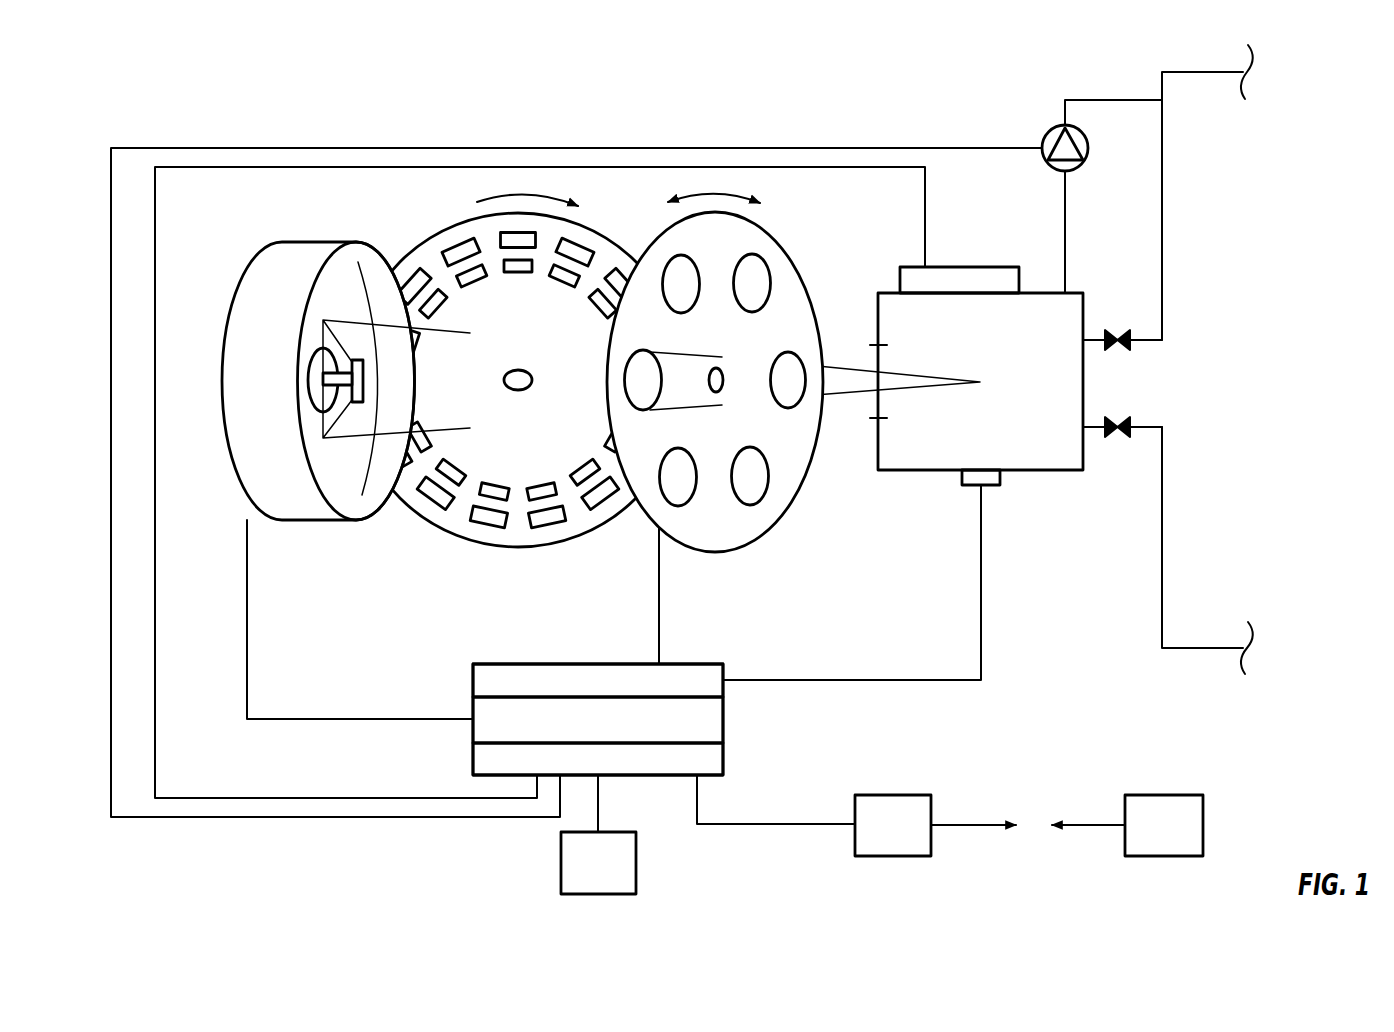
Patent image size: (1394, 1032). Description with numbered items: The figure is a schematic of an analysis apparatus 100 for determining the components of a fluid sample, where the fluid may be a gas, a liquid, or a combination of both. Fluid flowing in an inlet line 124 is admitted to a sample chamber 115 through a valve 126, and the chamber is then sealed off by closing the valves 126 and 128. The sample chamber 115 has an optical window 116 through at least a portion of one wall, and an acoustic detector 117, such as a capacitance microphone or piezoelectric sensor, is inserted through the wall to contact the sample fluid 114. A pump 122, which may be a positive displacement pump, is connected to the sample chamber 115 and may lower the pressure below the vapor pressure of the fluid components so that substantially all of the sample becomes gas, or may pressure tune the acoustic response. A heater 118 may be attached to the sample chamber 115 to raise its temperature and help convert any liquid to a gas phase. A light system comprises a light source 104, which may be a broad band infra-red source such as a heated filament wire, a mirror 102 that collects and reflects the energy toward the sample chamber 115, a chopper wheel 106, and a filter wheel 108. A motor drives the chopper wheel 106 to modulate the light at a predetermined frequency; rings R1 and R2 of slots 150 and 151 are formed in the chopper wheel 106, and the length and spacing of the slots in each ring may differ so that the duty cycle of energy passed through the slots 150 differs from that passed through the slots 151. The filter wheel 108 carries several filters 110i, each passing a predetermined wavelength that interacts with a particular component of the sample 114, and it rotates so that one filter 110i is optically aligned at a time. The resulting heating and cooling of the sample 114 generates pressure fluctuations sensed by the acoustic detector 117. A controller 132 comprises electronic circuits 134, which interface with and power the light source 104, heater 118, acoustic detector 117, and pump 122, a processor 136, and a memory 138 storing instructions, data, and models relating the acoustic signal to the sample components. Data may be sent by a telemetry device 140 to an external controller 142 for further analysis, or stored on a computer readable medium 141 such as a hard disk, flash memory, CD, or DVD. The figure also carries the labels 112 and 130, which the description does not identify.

The analysis apparatus 100 is at (203, 70).
The mirror 102 is at (283, 243).
The light source 104 is at (367, 382).
The chopper wheel 106 is at (518, 387).
The filter wheel 108 is at (741, 429).
The filter 110i is at (763, 495).
The light beam 112 is at (867, 393).
The sample fluid 114 is at (1030, 460).
The sample chamber 115 is at (1075, 287).
The optical window 116 is at (875, 362).
The acoustic detector 117 is at (970, 488).
The heater 118 is at (960, 263).
The pump 122 is at (1048, 130).
The inlet line 124 is at (1162, 517).
The valve 126 is at (1115, 423).
The valve 128 is at (1120, 350).
The inlet line 130 is at (1177, 70).
The controller 132 is at (646, 692).
The electronic circuits 134 is at (725, 672).
The processor 136 is at (725, 718).
The memory 138 is at (725, 758).
The telemetry device 140 is at (870, 868).
The computer readable medium 141 is at (575, 897).
The external controller 142 is at (1143, 858).
The slots 150 is at (580, 228).
The slots 151 is at (567, 283).
The ring R1 is at (482, 232).
The ring R2 is at (448, 287).